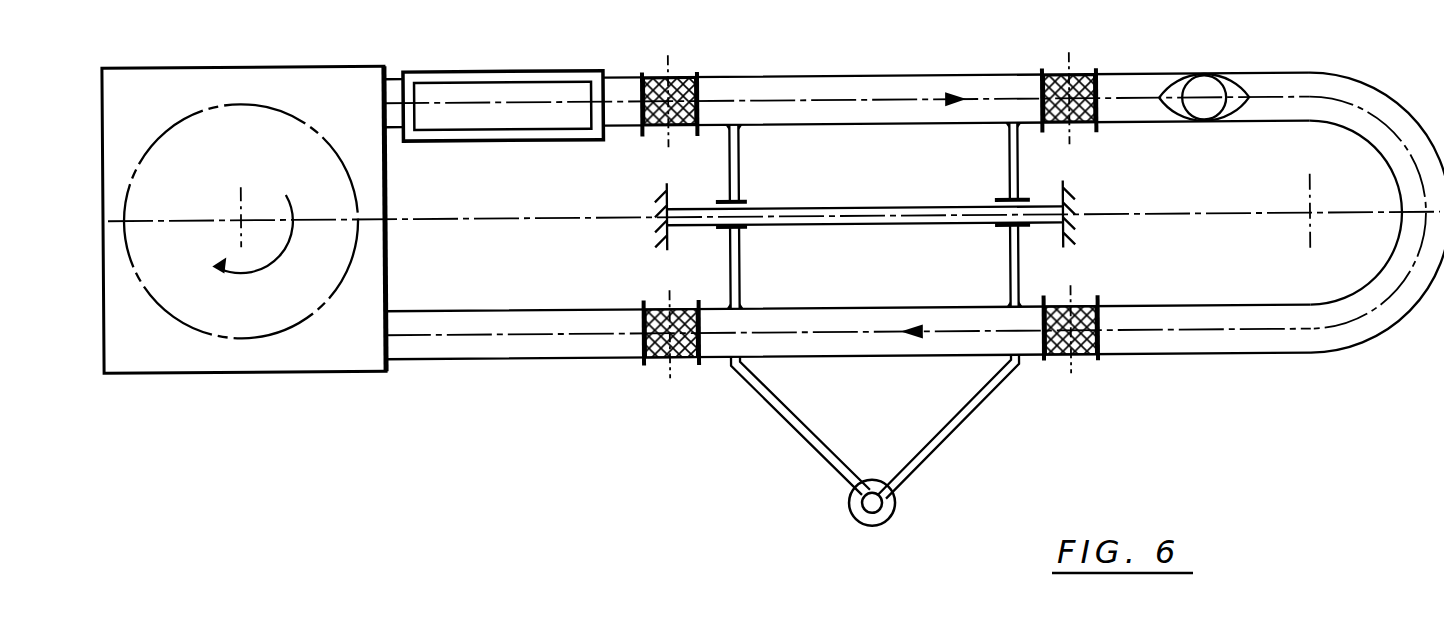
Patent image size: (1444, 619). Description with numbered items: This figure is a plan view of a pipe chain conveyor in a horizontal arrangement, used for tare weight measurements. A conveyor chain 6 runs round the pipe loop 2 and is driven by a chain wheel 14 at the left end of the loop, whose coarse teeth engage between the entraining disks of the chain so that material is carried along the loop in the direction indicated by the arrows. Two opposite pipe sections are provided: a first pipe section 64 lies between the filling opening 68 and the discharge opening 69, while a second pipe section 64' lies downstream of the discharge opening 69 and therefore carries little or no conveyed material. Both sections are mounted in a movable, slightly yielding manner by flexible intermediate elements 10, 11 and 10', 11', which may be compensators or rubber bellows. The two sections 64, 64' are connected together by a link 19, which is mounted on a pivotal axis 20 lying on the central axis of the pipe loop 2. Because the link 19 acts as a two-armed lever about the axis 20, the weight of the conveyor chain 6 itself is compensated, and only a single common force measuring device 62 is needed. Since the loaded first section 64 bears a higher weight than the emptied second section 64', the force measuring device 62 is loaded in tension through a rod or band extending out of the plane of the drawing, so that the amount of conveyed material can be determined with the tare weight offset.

The pipe loop 2 is at (1115, 61).
The conveyor chain 6 is at (324, 101).
The chain wheel 14 is at (318, 125).
The filling opening 68 is at (465, 91).
The flexible intermediate element 10 is at (684, 88).
The flexible intermediate element 10' is at (650, 347).
The flexible intermediate element 11 is at (1053, 85).
The flexible intermediate element 11' is at (1092, 344).
The first pipe section 64 is at (914, 193).
The second pipe section 64' is at (849, 355).
The discharge opening 69 is at (1213, 92).
The link 19 is at (741, 167).
The pivotal axis 20 is at (881, 209).
The force measuring device 62 is at (895, 512).